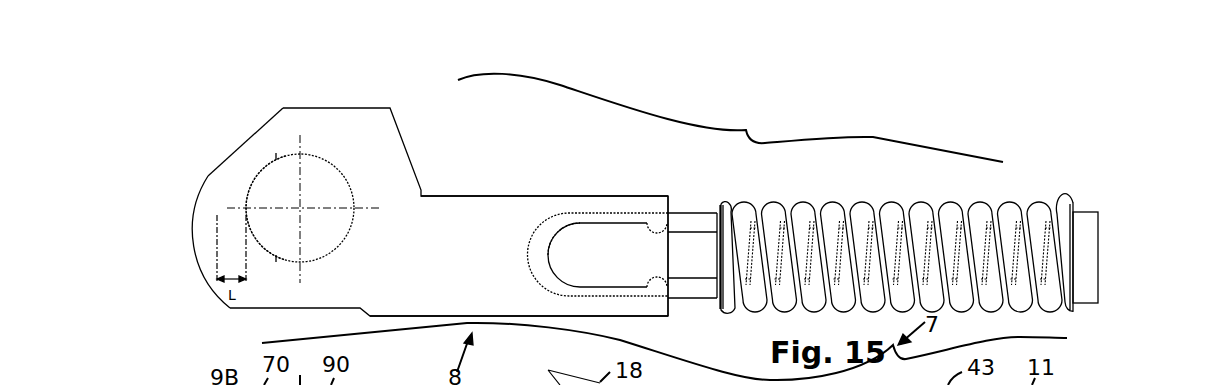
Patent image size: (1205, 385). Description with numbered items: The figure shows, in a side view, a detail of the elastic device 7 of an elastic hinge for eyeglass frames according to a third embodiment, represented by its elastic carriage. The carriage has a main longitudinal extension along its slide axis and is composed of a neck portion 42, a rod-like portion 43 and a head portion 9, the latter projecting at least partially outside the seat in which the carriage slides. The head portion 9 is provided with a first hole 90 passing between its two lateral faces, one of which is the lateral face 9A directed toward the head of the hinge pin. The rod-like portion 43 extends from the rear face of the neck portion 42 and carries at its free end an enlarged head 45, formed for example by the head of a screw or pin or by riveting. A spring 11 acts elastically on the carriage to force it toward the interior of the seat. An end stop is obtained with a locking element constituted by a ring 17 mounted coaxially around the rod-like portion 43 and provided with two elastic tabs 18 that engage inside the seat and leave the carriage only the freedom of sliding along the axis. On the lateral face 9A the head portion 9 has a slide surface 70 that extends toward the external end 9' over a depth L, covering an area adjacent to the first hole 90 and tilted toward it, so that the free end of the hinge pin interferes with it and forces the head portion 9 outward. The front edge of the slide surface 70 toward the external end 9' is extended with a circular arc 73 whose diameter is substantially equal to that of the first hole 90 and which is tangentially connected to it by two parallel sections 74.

The elastic device 7 is at (766, 121).
The head portion 9 is at (449, 188).
The external end 9' is at (186, 242).
The lateral face 9A is at (320, 209).
The spring 11 is at (1008, 215).
The ring 17 is at (688, 237).
The elastic tabs 18 is at (600, 247).
The neck portion 42 is at (488, 215).
The rod-like portion 43 is at (903, 238).
The enlarged head 45 is at (1085, 248).
The slide surface 70 is at (242, 175).
The circular arc 73 is at (222, 187).
The parallel sections 74 is at (278, 153).
The first hole 90 is at (328, 208).